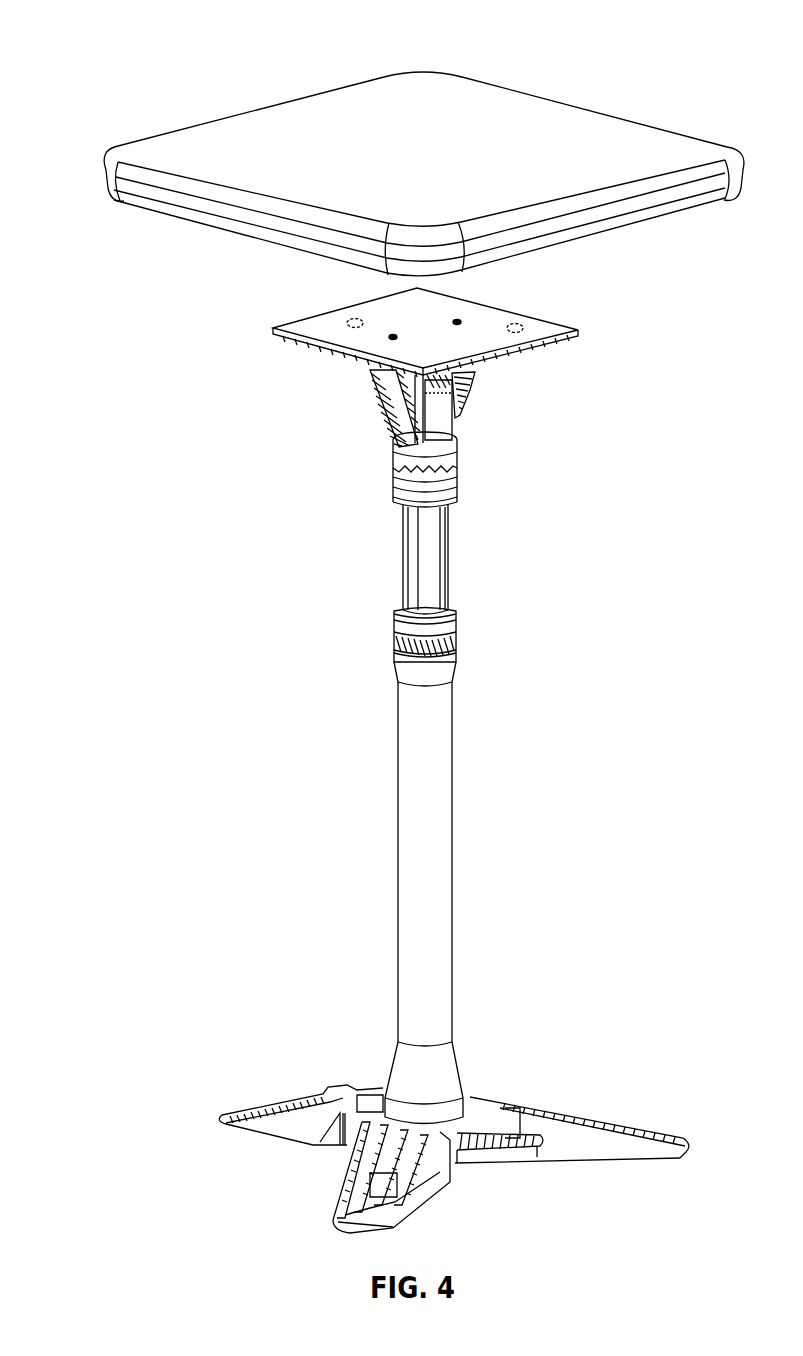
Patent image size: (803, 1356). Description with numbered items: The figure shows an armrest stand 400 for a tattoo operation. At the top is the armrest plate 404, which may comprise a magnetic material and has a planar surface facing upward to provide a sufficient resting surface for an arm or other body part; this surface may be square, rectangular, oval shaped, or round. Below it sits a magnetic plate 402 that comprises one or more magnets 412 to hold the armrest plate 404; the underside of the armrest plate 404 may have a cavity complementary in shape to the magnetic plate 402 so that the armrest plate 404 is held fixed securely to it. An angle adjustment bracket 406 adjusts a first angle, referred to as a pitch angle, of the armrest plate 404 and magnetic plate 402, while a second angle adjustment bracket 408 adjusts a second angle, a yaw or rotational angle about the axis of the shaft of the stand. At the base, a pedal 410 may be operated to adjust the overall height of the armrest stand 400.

The armrest stand 400 is at (650, 68).
The magnetic plate 402 is at (317, 313).
The armrest plate 404 is at (147, 154).
The angle adjustment bracket 406 is at (380, 410).
The second angle adjustment bracket 408 is at (397, 462).
The pedal 410 is at (513, 1167).
The magnets 412 is at (340, 326).